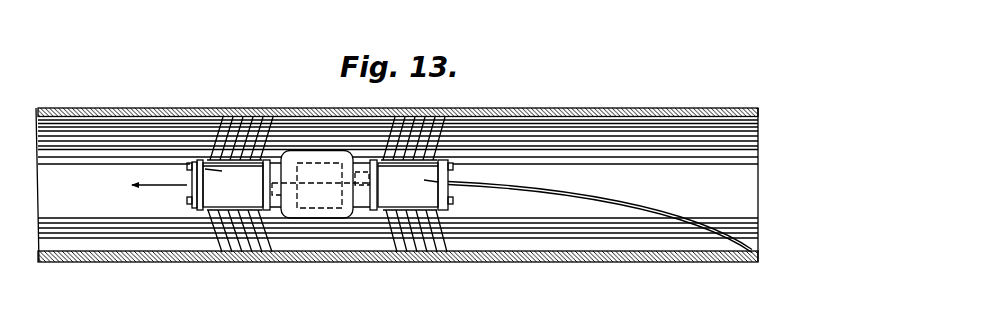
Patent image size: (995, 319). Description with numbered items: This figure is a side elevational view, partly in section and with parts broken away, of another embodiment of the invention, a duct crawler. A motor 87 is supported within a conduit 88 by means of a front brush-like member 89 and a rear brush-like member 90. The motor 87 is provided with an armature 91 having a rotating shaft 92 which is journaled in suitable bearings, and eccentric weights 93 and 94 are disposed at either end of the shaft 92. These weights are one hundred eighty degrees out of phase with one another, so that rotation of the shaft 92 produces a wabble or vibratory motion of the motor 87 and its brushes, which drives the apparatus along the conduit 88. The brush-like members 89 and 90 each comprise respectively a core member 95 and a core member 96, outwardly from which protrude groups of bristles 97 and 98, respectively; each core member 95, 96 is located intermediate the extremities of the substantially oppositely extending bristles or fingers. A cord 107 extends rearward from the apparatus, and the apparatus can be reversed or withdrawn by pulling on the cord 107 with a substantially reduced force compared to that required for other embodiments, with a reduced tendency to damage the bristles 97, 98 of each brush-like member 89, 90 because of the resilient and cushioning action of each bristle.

The motor 87 is at (315, 149).
The conduit 88 is at (583, 108).
The front brush-like member 89 is at (193, 192).
The rear brush-like member 90 is at (451, 192).
The armature 91 is at (310, 215).
The rotating shaft 92 is at (327, 215).
The eccentric weight 93 is at (264, 195).
The eccentric weight 94 is at (369, 176).
The core member 95 is at (222, 171).
The core member 96 is at (424, 180).
The bristles 97 is at (222, 118).
The bristles 98 is at (458, 136).
The cord 107 is at (630, 186).